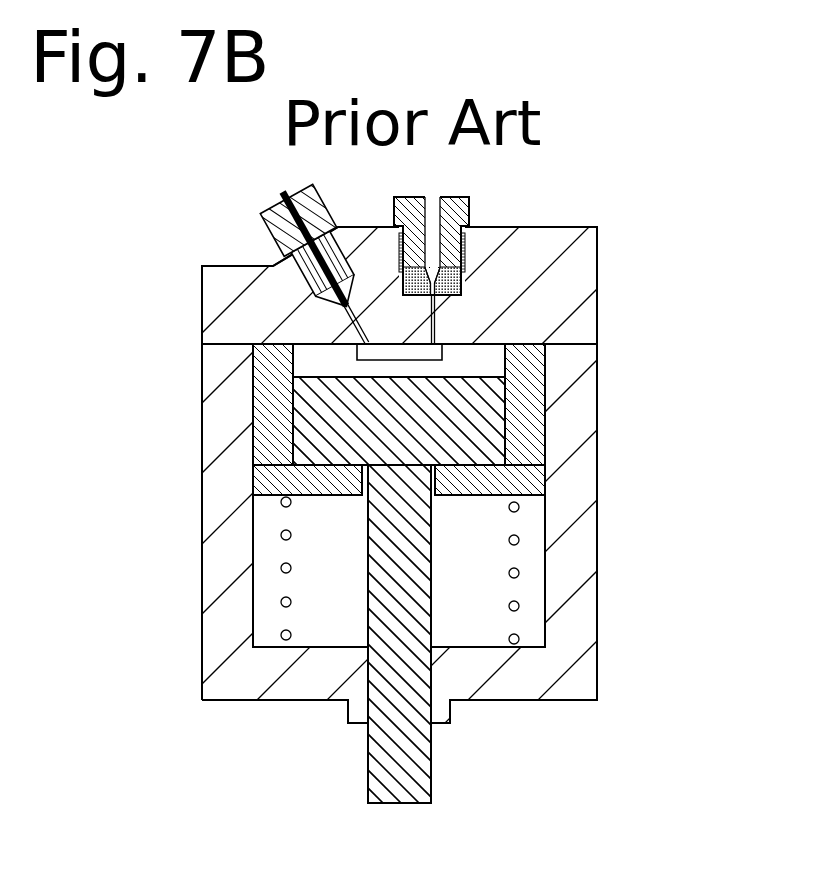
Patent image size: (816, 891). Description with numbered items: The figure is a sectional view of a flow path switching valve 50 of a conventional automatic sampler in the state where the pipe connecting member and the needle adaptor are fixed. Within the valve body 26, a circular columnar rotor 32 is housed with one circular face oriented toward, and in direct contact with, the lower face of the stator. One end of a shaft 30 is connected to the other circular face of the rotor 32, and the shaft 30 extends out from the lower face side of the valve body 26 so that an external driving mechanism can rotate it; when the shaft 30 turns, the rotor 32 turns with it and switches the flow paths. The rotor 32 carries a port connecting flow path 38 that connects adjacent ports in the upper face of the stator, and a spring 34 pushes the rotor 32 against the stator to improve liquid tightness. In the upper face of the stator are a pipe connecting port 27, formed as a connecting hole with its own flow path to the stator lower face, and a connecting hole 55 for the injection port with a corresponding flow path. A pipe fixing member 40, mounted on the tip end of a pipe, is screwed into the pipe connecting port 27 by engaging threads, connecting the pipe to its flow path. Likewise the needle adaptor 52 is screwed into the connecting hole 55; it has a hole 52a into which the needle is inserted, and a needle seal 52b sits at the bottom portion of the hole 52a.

The valve body 26 is at (597, 658).
The pipe connecting port 27 is at (300, 277).
The shaft 30 is at (415, 565).
The rotor 32 is at (492, 360).
The spring 34 is at (520, 603).
The port connecting flow path 38 is at (393, 352).
The pipe fixing member 40 is at (273, 223).
The flow path switching valve 50 is at (630, 362).
The needle adaptor 52 is at (457, 250).
The hole 52a is at (432, 205).
The needle seal 52b is at (458, 275).
The connecting hole for the injection port 55 is at (462, 250).